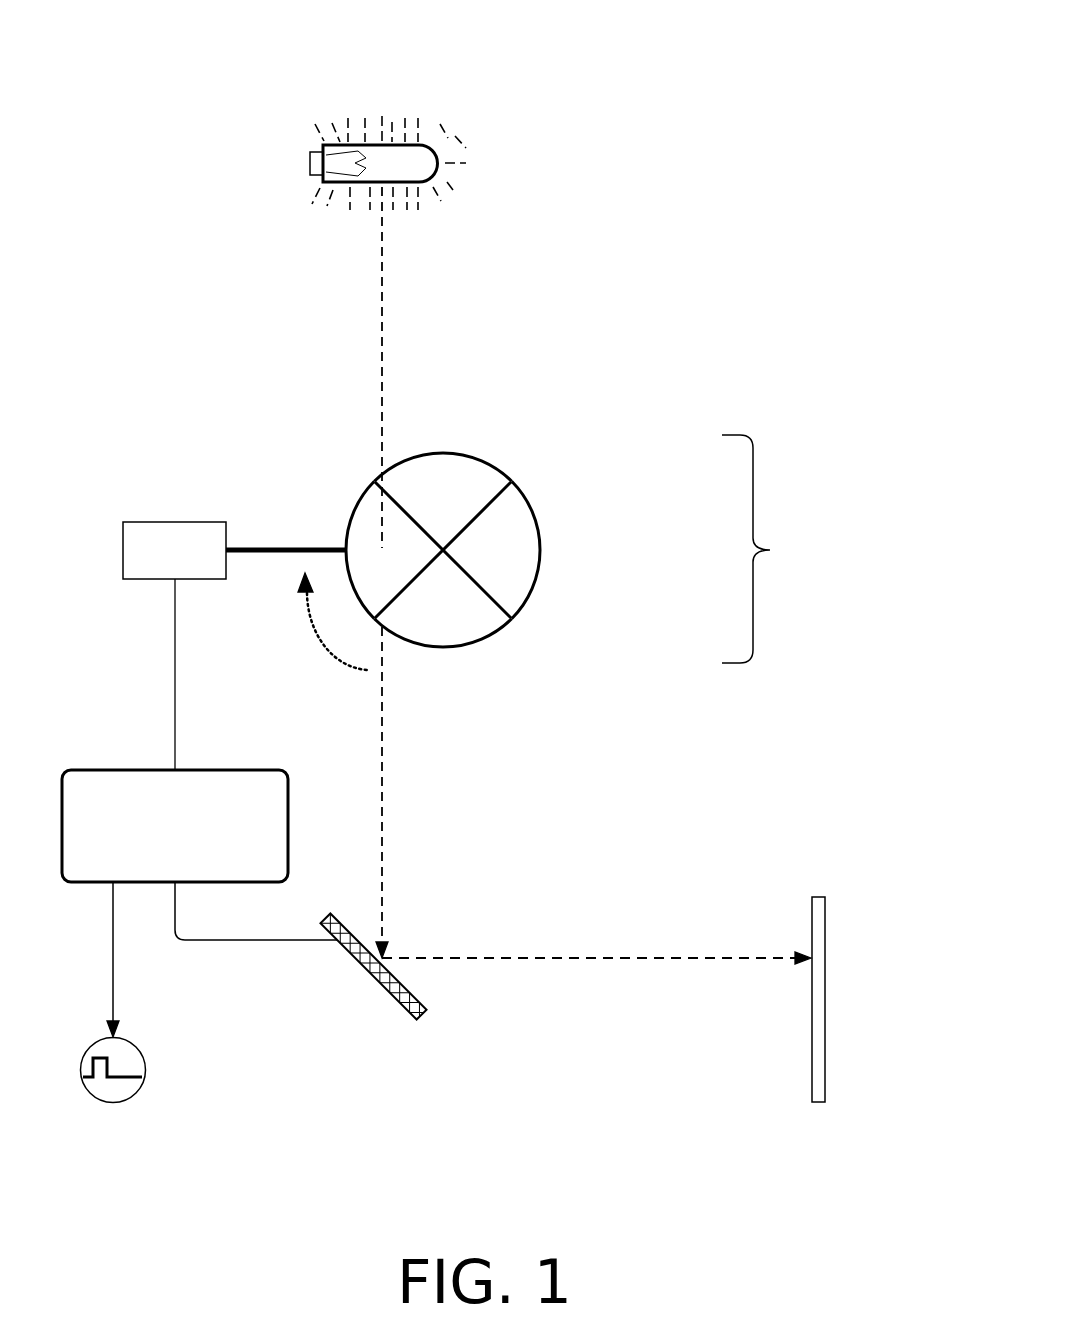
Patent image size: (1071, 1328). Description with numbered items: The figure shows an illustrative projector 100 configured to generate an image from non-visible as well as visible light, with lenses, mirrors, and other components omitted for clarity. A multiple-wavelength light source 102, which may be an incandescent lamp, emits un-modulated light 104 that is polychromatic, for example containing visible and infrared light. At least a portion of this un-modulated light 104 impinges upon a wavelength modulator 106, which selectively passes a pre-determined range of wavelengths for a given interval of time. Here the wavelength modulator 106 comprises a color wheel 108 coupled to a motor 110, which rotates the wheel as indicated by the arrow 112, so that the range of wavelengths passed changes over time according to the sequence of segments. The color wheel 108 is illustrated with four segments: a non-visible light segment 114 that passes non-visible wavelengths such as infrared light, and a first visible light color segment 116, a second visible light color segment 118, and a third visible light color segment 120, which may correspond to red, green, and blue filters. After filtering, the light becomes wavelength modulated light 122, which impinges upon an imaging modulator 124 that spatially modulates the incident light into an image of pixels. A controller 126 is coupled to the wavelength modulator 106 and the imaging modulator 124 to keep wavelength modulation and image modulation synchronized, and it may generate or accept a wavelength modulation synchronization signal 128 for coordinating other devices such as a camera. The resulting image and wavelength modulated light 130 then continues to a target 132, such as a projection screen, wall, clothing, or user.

The projector 100 is at (787, 40).
The multiple-wavelength light source 102 is at (385, 108).
The un-modulated light 104 is at (486, 367).
The wavelength modulator 106 is at (499, 542).
The color wheel 108 is at (479, 542).
The motor 110 is at (157, 573).
The arrow 112 is at (295, 621).
The non-visible light segment 114 is at (238, 486).
The first visible light color segment 116 is at (452, 487).
The second visible light color segment 118 is at (497, 543).
The third visible light color segment 120 is at (450, 622).
The wavelength modulated light 122 is at (443, 792).
The imaging modulator 124 is at (403, 1010).
The controller 126 is at (158, 849).
The wavelength modulation synchronization signal 128 is at (153, 1057).
The image and wavelength modulated light 130 is at (596, 1007).
The target 132 is at (820, 915).